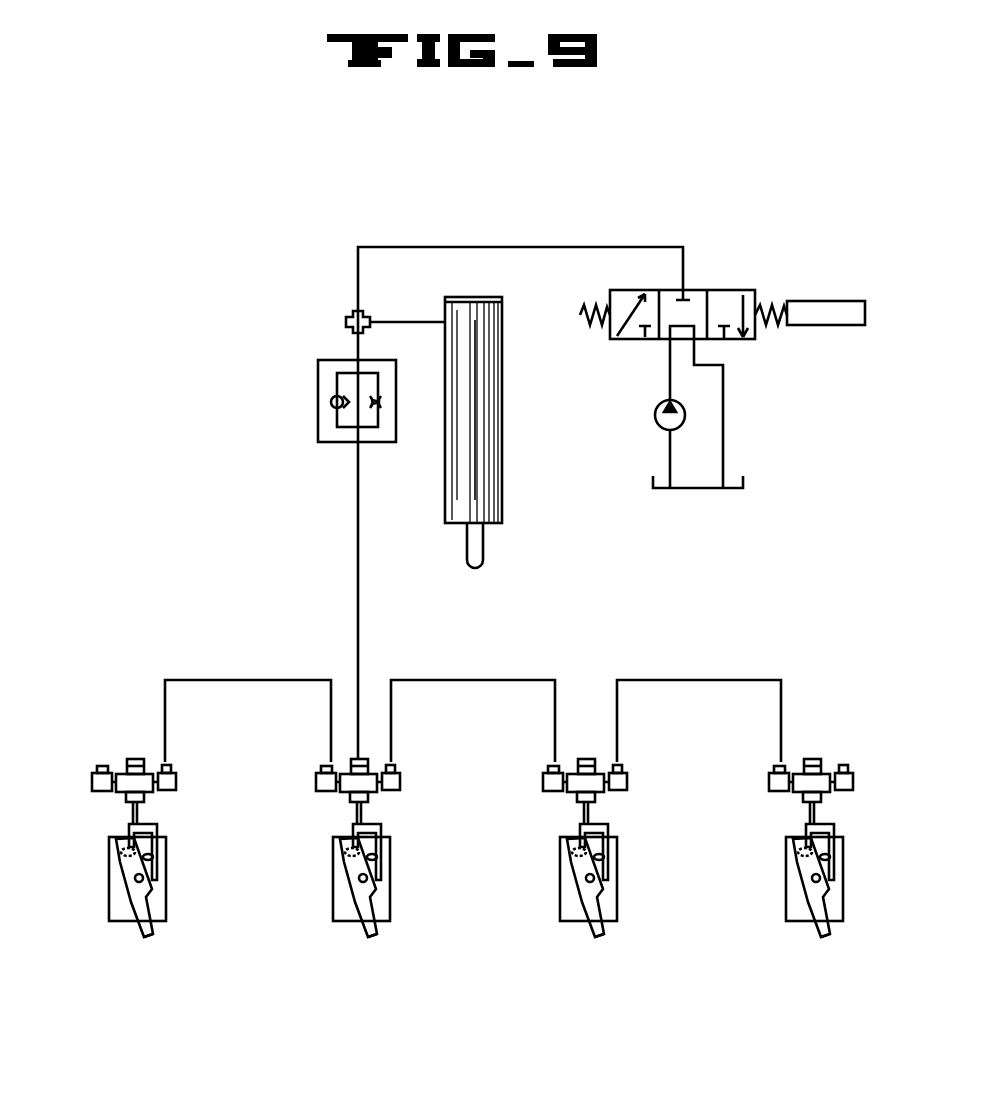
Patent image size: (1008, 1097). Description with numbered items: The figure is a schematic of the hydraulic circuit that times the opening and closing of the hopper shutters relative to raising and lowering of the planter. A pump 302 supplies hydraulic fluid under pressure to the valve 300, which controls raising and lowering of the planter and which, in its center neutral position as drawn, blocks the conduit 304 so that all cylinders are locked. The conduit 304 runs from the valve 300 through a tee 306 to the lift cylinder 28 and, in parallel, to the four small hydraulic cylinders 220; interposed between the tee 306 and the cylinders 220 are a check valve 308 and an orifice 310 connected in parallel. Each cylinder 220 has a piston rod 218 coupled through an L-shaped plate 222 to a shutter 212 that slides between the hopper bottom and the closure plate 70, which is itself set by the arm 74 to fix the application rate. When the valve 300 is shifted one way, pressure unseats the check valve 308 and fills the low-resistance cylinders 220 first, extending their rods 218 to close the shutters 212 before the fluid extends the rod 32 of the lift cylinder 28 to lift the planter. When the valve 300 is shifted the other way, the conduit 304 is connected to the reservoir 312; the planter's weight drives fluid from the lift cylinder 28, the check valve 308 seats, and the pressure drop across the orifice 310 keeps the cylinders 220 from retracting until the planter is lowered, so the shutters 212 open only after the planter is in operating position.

The lift cylinder 28 is at (503, 355).
The rod 32 is at (483, 548).
The closure plate 70 is at (128, 898).
The arm 74 is at (152, 938).
The shutter 212 is at (155, 867).
The piston rod 218 is at (129, 812).
The hydraulic cylinder 220 is at (142, 800).
The L-shaped plate 222 is at (158, 826).
The valve 300 is at (718, 290).
The pump 302 is at (655, 417).
The conduit 304 is at (480, 247).
The tee 306 is at (346, 322).
The check valve 308 is at (330, 400).
The orifice 310 is at (382, 402).
The reservoir 312 is at (652, 488).